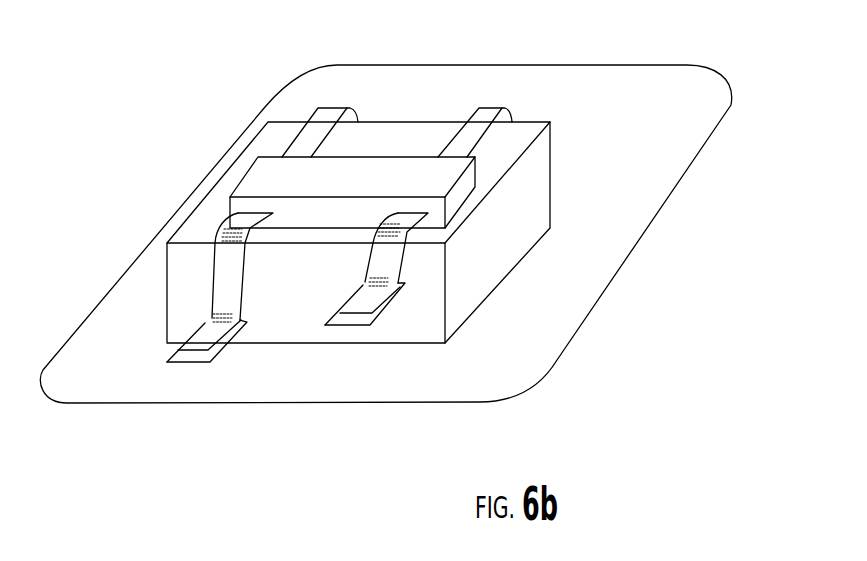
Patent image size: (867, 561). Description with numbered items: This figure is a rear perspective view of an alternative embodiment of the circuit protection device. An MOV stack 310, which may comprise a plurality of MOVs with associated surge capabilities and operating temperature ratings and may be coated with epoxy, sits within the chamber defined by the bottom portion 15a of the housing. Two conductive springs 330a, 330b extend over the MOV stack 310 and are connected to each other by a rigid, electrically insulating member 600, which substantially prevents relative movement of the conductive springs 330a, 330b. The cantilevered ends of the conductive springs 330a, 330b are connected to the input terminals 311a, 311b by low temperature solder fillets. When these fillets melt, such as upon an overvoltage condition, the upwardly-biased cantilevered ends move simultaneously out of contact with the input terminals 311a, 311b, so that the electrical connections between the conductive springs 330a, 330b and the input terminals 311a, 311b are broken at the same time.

The bottom portion 15a is at (683, 77).
The MOV stack 310 is at (540, 183).
The insulating member 600 is at (265, 180).
The conductive spring 330a is at (343, 107).
The conductive spring 330b is at (497, 107).
The input terminal 311a is at (210, 362).
The input terminal 311b is at (369, 325).